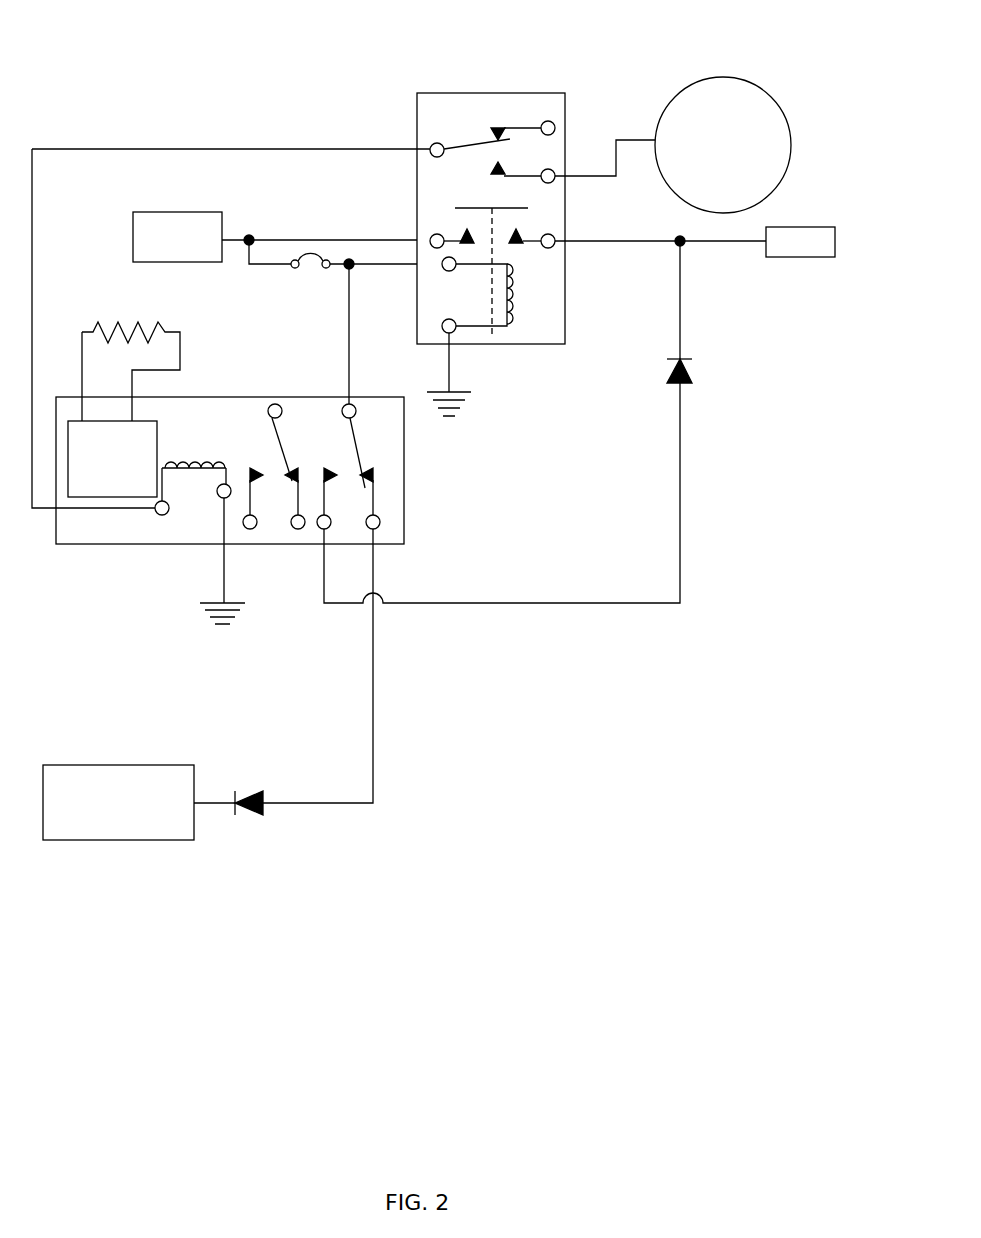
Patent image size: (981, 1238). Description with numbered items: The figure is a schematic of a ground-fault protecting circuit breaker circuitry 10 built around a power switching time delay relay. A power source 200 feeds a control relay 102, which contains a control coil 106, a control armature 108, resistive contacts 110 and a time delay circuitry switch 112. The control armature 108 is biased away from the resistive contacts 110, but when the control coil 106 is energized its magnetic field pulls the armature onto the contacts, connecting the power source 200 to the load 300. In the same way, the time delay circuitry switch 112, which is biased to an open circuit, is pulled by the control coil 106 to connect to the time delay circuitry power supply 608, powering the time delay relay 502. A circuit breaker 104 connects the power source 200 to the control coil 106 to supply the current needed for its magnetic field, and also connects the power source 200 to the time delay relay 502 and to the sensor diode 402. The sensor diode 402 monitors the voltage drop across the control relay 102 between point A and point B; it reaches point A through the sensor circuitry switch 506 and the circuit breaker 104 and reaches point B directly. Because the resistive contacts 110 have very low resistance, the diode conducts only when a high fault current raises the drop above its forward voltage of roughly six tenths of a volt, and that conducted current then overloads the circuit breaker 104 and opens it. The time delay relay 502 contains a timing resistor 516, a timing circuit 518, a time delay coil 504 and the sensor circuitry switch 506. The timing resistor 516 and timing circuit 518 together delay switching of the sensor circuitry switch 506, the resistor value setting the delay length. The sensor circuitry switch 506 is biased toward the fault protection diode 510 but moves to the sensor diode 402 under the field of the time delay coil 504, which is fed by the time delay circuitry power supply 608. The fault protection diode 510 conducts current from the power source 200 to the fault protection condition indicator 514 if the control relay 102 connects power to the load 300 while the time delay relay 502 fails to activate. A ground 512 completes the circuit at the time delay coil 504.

The circuit breaker circuitry 10 is at (660, 27).
The control relay 102 is at (538, 93).
The time delay circuitry switch 112 is at (452, 150).
The control armature 108 is at (486, 208).
The resistive contacts 110 is at (464, 238).
The control coil 106 is at (520, 290).
The power source 200 is at (172, 212).
The point A is at (251, 236).
The circuit breaker 104 is at (318, 258).
The time delay relay 502 is at (362, 397).
The timing resistor 516 is at (140, 330).
The timing circuit 518 is at (148, 421).
The time delay coil 504 is at (185, 462).
The ground 512 is at (224, 586).
The sensor circuitry switch 506 is at (353, 445).
The fault protection condition indicator 514 is at (130, 765).
The fault protection diode 510 is at (268, 815).
The time delay circuitry power supply 608 is at (770, 95).
The point B is at (684, 238).
The load 300 is at (818, 227).
The sensor diode 402 is at (687, 357).